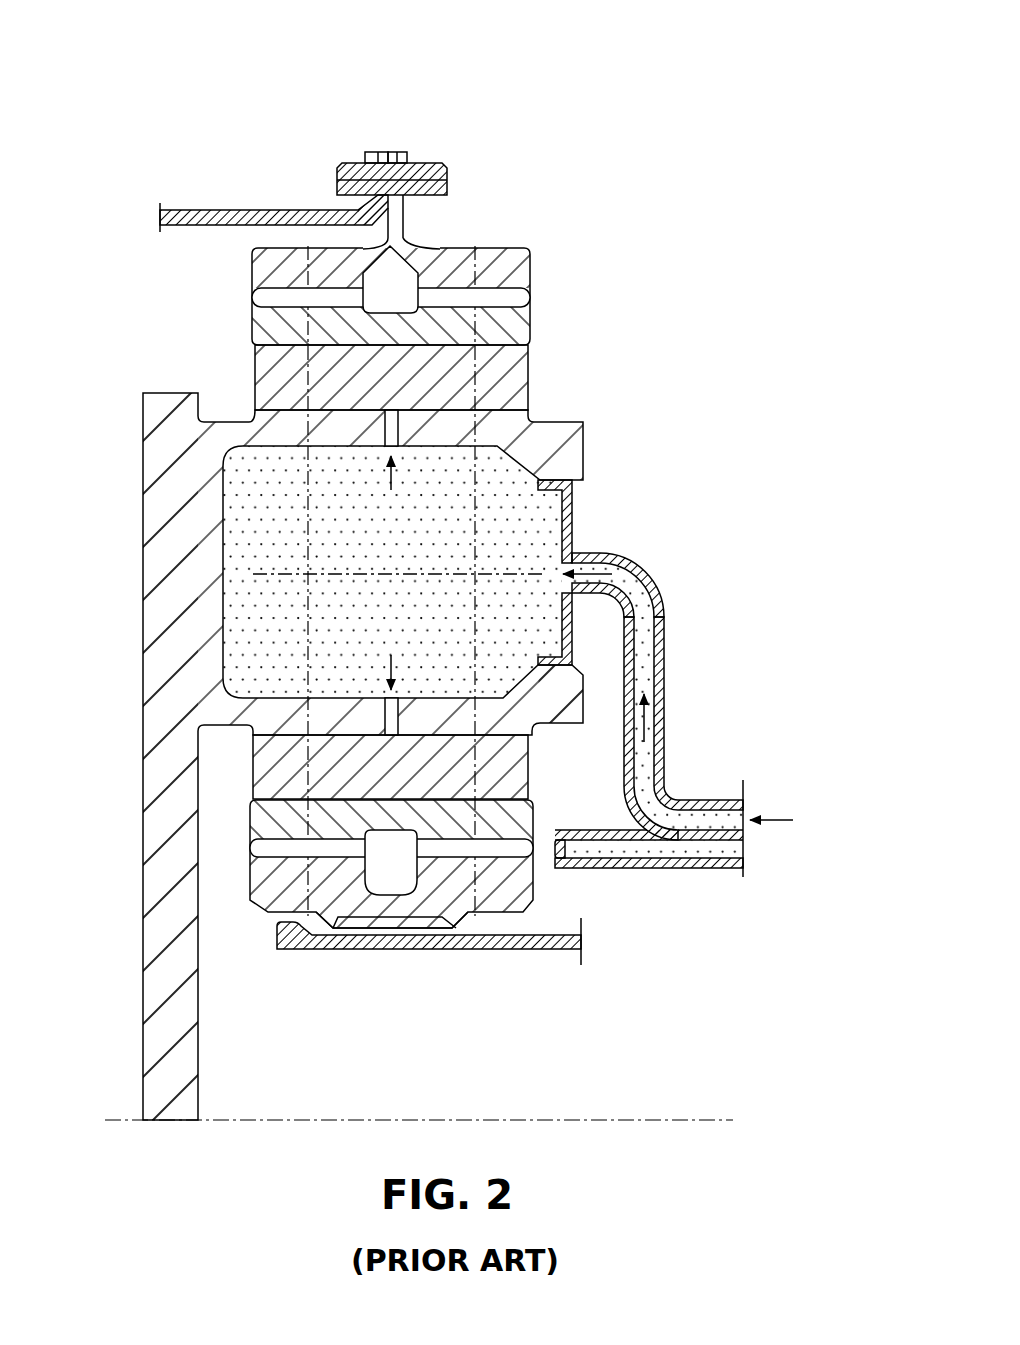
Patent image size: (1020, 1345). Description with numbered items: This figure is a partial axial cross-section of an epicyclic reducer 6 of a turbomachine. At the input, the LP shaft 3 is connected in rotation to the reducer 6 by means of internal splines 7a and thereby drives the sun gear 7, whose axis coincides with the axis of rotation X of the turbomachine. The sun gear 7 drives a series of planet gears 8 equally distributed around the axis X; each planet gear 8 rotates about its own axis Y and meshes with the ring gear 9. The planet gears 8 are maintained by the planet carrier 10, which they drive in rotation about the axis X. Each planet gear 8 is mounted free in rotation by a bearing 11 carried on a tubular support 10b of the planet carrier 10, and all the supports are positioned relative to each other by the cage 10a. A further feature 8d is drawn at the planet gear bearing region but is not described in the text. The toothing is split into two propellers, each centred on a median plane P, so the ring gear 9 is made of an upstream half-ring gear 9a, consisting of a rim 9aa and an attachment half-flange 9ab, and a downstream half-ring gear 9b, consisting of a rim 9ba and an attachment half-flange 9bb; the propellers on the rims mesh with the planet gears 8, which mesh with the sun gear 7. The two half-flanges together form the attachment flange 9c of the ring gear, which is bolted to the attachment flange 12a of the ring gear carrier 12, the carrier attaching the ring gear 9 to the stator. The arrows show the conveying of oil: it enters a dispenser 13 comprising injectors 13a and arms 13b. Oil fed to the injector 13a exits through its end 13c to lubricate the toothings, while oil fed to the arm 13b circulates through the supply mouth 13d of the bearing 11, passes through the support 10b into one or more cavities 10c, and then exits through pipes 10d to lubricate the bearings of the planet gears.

The LP shaft 3 is at (535, 940).
The epicyclic reducer 6 is at (438, 565).
The sun gear 7 is at (257, 883).
The internal splines 7a is at (362, 929).
The planet gears 8 is at (290, 830).
The bearing gap 8d is at (262, 848).
The ring gear 9 is at (360, 249).
The upstream half-ring gear 9a is at (317, 230).
The rim 9aa is at (283, 263).
The attachment half-flange 9ab is at (385, 150).
The downstream half-ring gear 9b is at (520, 275).
The rim 9ba is at (457, 265).
The attachment half-flange 9bb is at (400, 150).
The attachment flange of the ring gear 9c is at (407, 103).
The planet carrier 10 is at (410, 756).
The cage 10a is at (177, 510).
The tubular support 10b is at (570, 698).
The cavities 10c is at (392, 572).
The pipes 10d is at (398, 428).
The bearing 11 is at (522, 384).
The ring gear carrier 12 is at (274, 146).
The attachment flange of the ring gear carrier 12a is at (372, 152).
The dispenser 13 is at (678, 719).
The injectors 13a is at (677, 866).
The arms 13b is at (660, 640).
The end 13c is at (556, 870).
The supply mouth 13d is at (572, 503).
The median plane P is at (307, 893).
The axis of rotation X is at (690, 1120).
The axis Y is at (537, 570).